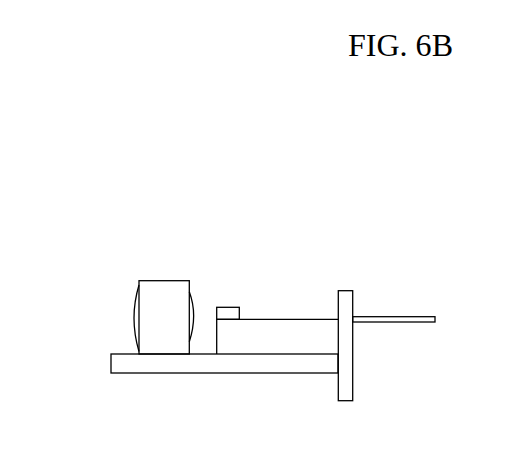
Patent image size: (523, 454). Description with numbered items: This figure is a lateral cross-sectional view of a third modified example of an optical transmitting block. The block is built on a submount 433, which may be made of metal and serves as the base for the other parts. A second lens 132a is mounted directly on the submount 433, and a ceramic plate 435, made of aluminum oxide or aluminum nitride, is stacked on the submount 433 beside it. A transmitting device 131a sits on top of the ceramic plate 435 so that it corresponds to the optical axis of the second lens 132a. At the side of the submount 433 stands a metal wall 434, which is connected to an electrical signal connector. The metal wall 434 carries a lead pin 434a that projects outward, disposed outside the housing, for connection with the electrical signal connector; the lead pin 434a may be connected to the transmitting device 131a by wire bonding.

The submount 433 is at (111, 360).
The second lens 132a is at (161, 284).
The transmitting device 131a is at (229, 309).
The ceramic plate 435 is at (311, 326).
The metal wall 434 is at (353, 379).
The lead pin 434a is at (396, 315).